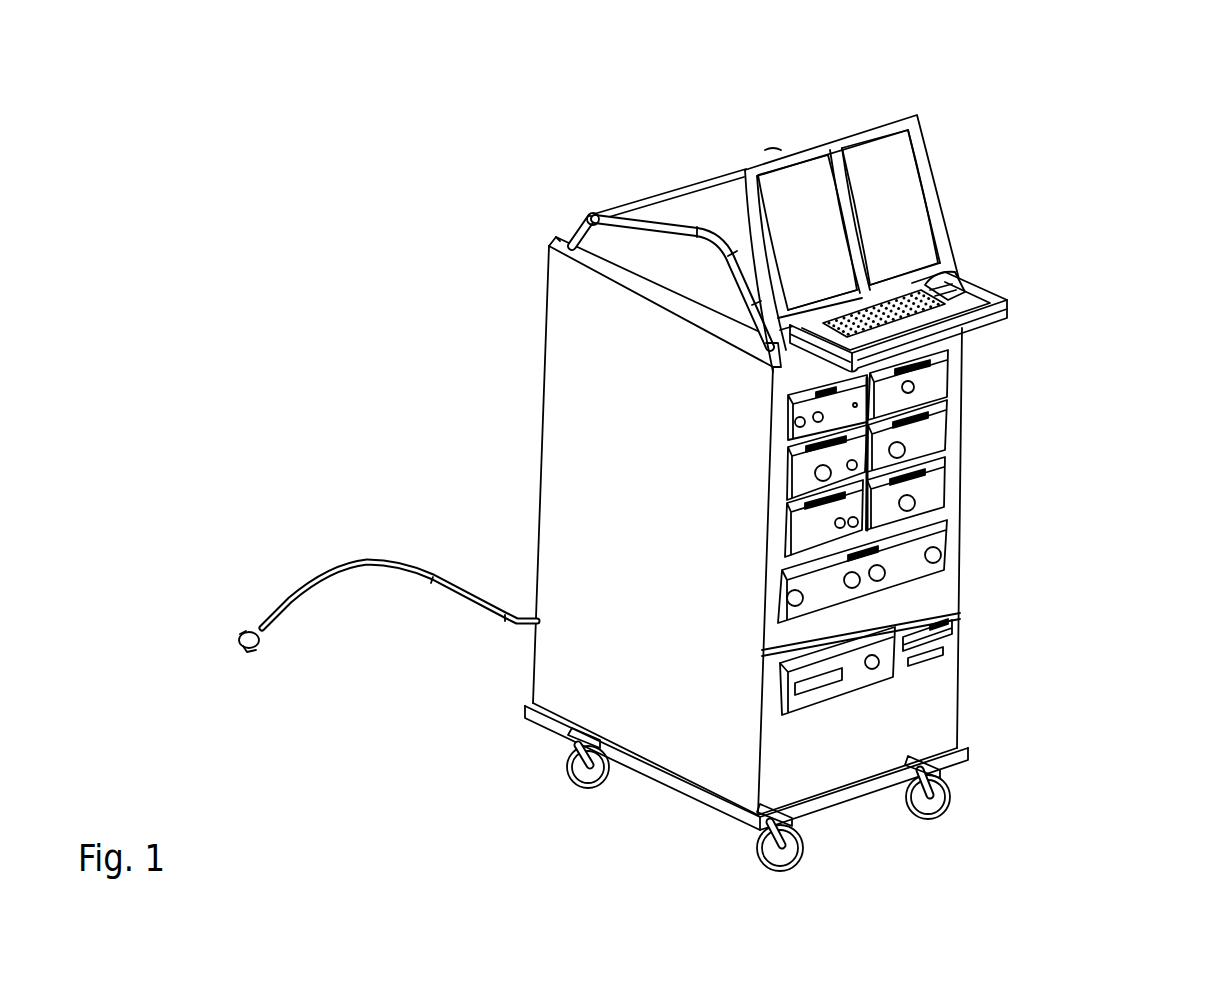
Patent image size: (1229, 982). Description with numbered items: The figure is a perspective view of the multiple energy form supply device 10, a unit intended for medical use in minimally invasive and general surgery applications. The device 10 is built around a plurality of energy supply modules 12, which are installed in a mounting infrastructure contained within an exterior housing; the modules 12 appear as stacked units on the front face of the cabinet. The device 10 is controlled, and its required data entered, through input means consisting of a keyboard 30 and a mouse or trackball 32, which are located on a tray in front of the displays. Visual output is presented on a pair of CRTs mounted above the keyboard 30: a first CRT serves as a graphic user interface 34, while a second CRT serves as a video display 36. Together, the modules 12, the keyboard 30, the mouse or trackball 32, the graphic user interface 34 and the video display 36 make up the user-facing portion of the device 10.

The multiple energy form supply device 10 is at (610, 106).
The energy supply modules 12 is at (928, 502).
The keyboard 30 is at (975, 300).
The mouse or trackball 32 is at (950, 285).
The graphic user interface 34 is at (777, 187).
The video display 36 is at (893, 170).